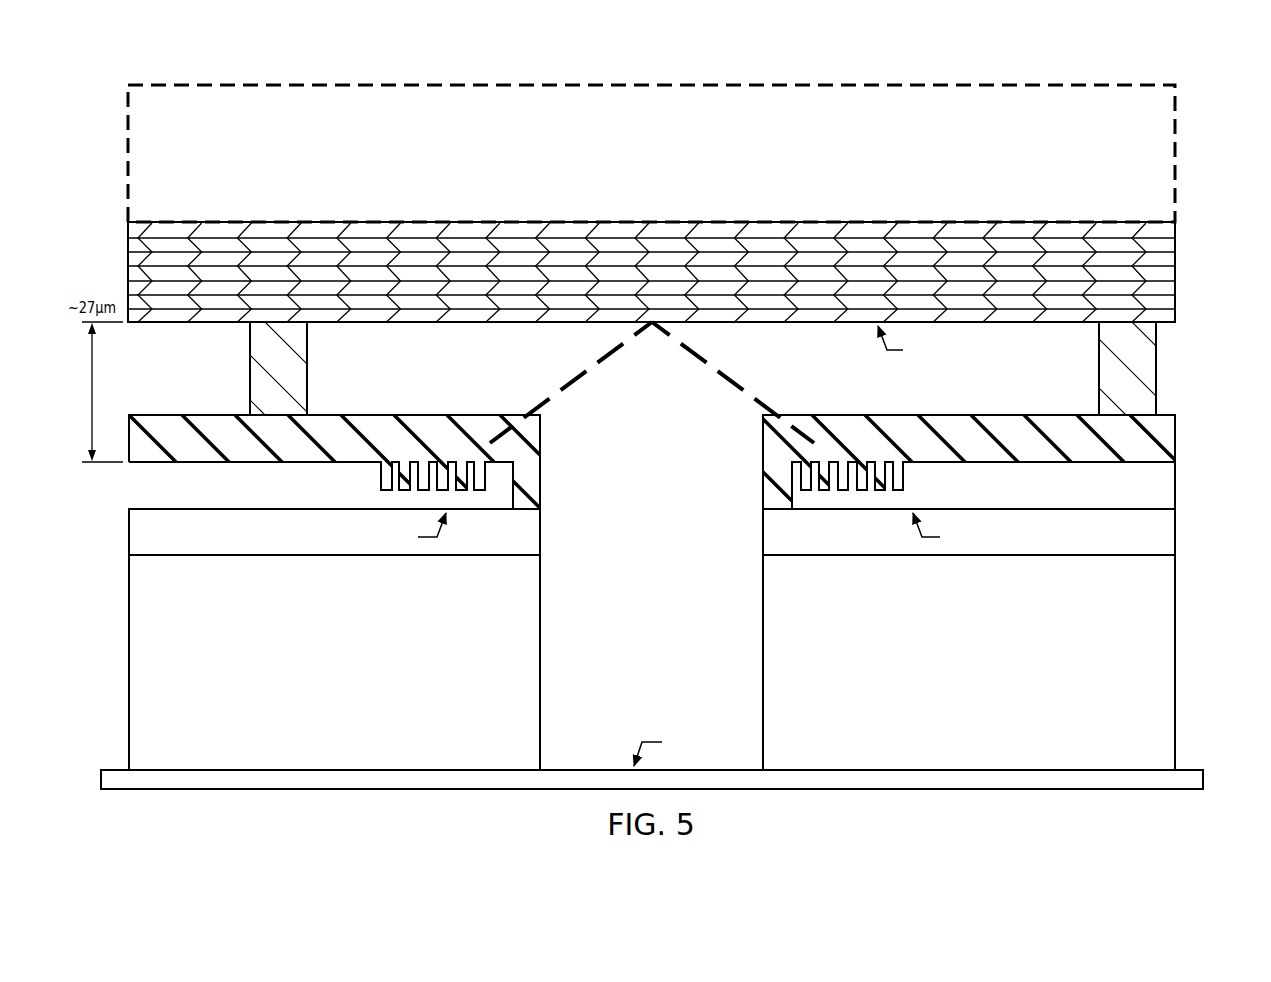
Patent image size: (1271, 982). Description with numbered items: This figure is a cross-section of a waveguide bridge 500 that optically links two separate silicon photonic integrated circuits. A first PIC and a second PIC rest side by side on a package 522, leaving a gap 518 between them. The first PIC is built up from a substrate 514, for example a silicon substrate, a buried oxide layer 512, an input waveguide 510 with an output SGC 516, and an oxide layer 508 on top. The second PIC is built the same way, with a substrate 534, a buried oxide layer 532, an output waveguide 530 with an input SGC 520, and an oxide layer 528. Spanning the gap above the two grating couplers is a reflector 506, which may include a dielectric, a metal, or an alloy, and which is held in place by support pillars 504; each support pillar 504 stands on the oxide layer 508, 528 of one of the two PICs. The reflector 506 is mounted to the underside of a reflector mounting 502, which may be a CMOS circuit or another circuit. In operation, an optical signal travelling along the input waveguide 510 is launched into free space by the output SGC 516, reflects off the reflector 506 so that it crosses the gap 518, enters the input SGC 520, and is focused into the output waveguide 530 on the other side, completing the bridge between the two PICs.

The waveguide bridge 500 is at (1205, 182).
The reflector mounting 502 is at (637, 183).
The support pillar 504 is at (260, 393).
The reflector 506 is at (770, 323).
The oxide layer 508 is at (372, 421).
The input waveguide 510 is at (137, 487).
The buried oxide layer 512 is at (137, 532).
The substrate 514 is at (352, 692).
The output SGC 516 is at (412, 467).
The gap 518 is at (674, 431).
The input SGC 520 is at (868, 467).
The package 522 is at (335, 781).
The oxide layer 528 is at (1167, 437).
The output waveguide 530 is at (1167, 485).
The buried oxide layer 532 is at (1167, 532).
The substrate 534 is at (986, 692).